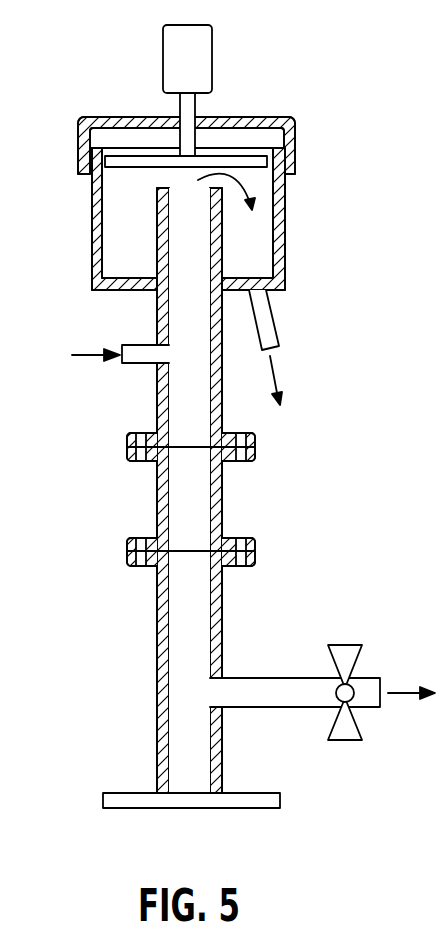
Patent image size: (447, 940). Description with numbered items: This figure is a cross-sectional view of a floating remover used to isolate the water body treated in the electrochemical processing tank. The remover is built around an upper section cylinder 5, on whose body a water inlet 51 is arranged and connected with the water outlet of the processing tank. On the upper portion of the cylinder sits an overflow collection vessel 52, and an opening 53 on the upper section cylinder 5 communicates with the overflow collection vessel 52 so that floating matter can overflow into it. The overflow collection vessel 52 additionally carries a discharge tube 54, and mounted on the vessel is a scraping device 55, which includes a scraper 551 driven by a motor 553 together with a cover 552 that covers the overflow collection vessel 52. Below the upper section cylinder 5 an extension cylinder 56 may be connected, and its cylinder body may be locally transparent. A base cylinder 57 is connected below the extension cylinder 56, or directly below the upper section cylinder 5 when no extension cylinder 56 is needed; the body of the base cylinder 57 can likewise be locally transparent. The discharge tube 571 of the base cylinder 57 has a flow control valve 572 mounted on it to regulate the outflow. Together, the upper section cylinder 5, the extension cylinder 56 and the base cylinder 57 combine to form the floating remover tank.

The upper section cylinder 5 is at (182, 215).
The water inlet 51 is at (133, 360).
The overflow collection vessel 52 is at (285, 217).
The opening 53 is at (175, 188).
The discharge tube 54 is at (275, 310).
The scraping device 55 is at (273, 118).
The scraper 551 is at (131, 168).
The cover 552 is at (92, 117).
The motor 553 is at (206, 52).
The extension cylinder 56 is at (158, 490).
The base cylinder 57 is at (157, 690).
The discharge tube 571 is at (283, 678).
The flow control valve 572 is at (347, 742).